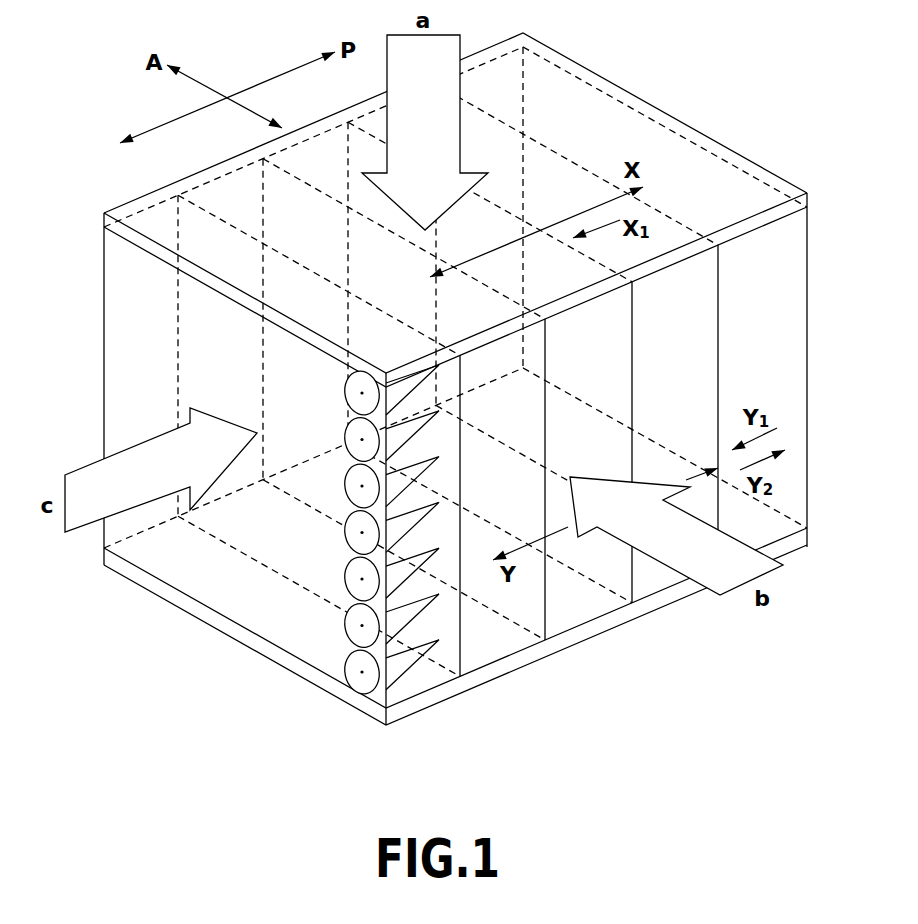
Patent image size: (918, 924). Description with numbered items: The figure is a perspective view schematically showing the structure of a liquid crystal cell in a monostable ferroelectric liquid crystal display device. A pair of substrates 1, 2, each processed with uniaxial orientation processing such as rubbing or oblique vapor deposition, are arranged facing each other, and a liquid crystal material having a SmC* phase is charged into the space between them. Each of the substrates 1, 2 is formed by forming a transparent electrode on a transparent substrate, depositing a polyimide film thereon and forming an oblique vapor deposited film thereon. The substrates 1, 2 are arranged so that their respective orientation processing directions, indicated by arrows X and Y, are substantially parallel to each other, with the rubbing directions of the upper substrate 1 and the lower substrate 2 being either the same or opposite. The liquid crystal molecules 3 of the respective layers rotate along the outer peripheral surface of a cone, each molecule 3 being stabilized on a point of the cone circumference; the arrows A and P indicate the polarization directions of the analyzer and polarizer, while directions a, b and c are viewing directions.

The substrate 1 is at (640, 108).
The substrate 2 is at (590, 637).
The liquid crystal molecule 3 is at (400, 646).